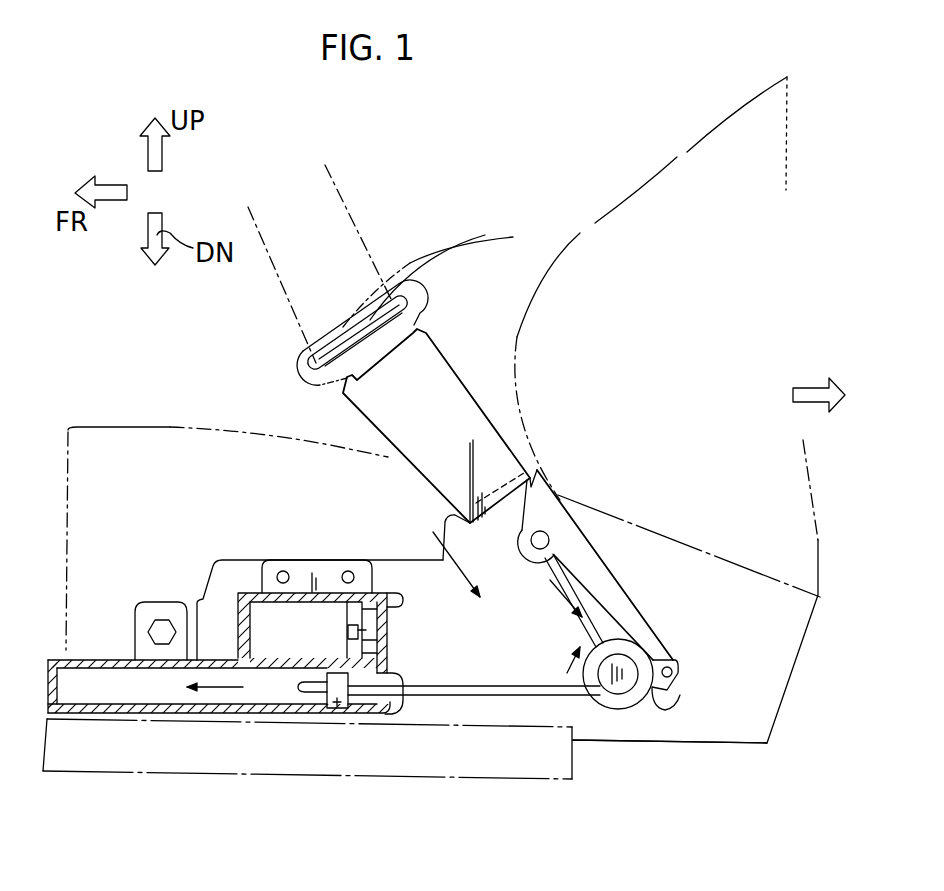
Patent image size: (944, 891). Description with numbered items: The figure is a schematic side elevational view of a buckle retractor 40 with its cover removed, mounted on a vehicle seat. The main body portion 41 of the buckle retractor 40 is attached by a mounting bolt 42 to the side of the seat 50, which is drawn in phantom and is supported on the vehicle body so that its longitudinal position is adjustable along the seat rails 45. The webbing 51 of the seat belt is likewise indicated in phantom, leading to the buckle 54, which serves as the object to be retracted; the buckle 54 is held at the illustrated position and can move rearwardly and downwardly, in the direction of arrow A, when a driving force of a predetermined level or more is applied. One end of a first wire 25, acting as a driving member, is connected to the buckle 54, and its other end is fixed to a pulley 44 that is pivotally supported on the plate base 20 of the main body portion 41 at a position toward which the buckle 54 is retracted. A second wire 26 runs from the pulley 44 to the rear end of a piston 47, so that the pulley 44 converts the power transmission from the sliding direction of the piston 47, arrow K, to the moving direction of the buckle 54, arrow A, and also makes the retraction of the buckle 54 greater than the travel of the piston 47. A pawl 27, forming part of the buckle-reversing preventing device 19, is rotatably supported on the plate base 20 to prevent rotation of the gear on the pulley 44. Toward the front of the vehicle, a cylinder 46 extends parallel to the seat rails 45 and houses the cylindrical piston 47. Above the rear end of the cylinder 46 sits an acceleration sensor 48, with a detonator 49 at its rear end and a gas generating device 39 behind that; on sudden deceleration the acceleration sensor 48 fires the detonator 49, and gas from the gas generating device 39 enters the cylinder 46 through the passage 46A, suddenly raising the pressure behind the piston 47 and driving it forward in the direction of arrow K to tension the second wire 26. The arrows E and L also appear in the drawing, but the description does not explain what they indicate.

The buckle-reversing preventing device 19 is at (684, 647).
The plate base 20 is at (579, 527).
The first wire 25 is at (600, 603).
The second wire 26 is at (497, 705).
The pawl 27 is at (680, 692).
The gas generating device 39 is at (367, 630).
The buckle retractor 40 is at (193, 461).
The main body portion 41 is at (392, 560).
The mounting bolt 42 is at (165, 612).
The pulley 44 is at (673, 713).
The seat rails 45 is at (100, 773).
The cylinder 46 is at (293, 714).
The passage 46A is at (375, 715).
The piston 47 is at (340, 714).
The acceleration sensor 48 is at (257, 593).
The detonator 49 is at (348, 622).
The seat 50 is at (97, 418).
The webbing 51 is at (342, 213).
The buckle 54 is at (447, 360).
The arrow indicating sliding direction of piston K is at (225, 693).
The arrow indicating moving direction of buckle A is at (468, 587).
The direction E is at (548, 608).
The direction L is at (562, 670).